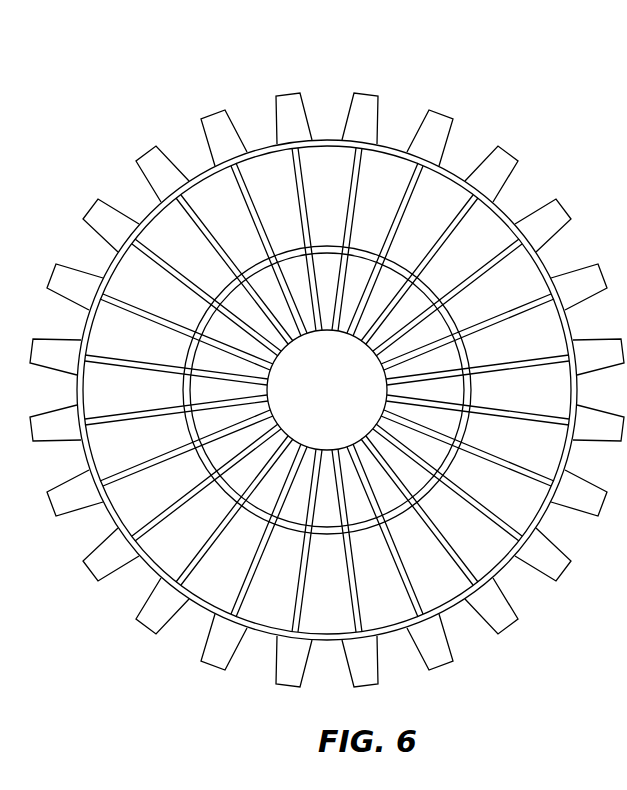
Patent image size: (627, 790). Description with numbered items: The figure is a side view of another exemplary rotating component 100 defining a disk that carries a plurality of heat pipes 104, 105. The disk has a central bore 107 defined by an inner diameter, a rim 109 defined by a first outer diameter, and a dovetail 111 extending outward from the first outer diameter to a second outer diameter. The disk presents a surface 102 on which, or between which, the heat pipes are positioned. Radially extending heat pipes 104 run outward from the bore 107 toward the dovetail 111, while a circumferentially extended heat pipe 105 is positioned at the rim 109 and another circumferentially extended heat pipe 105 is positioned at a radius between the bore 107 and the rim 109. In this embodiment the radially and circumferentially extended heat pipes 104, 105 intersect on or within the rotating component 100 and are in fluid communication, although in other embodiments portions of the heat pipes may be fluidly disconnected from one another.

The rotating component 100 is at (133, 52).
The surface 102 is at (165, 237).
The heat pipe 104 is at (358, 167).
The circumferentially extended heat pipe 105 is at (468, 168).
The bore 107 is at (372, 364).
The rim 109 is at (512, 204).
The dovetail 111 is at (553, 215).